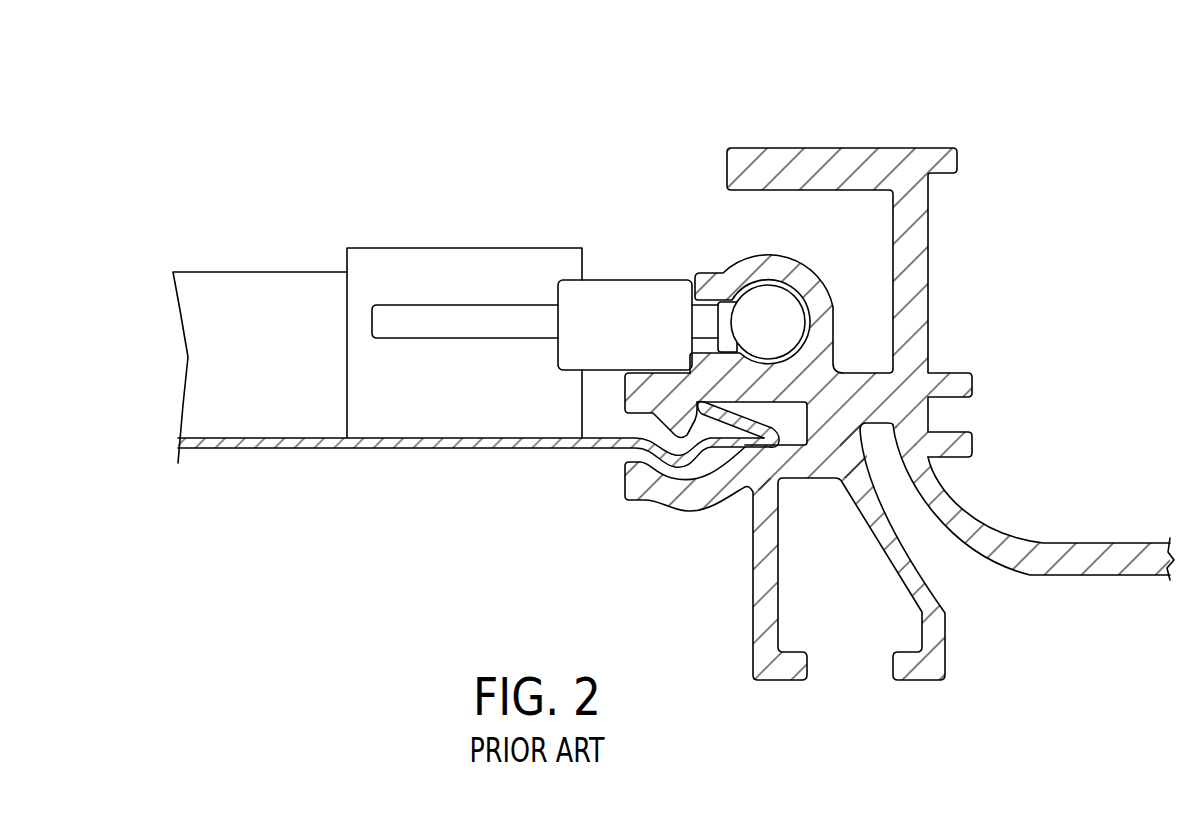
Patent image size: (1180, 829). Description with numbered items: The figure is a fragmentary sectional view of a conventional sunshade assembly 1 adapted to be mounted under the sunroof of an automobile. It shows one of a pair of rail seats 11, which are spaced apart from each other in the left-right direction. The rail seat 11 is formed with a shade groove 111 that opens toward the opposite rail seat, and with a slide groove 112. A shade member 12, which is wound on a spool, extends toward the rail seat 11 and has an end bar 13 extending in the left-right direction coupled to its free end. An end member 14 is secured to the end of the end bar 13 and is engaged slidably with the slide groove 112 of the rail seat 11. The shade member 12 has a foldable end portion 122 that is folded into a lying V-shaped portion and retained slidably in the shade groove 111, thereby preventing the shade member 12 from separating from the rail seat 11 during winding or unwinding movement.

The sunshade assembly 1 is at (591, 211).
The rail seat 11 is at (899, 354).
The shade groove 111 is at (783, 428).
The slide groove 112 is at (797, 290).
The shade member 12 is at (281, 448).
The foldable end portion 122 is at (733, 405).
The end bar 13 is at (276, 295).
The end member 14 is at (756, 322).